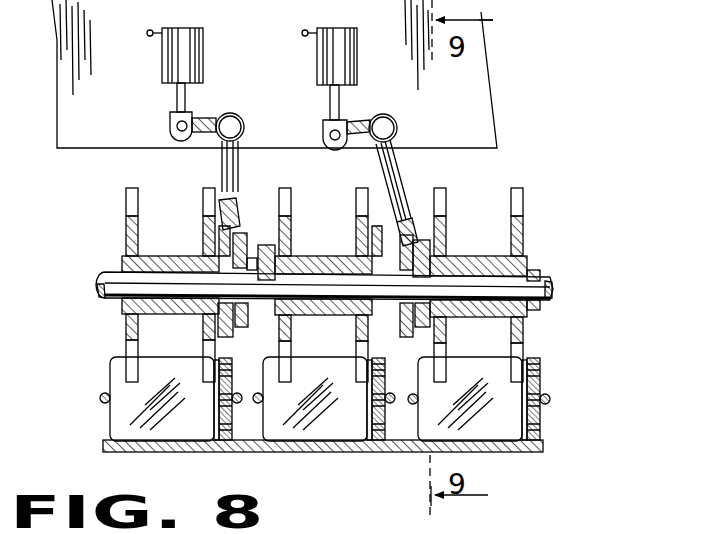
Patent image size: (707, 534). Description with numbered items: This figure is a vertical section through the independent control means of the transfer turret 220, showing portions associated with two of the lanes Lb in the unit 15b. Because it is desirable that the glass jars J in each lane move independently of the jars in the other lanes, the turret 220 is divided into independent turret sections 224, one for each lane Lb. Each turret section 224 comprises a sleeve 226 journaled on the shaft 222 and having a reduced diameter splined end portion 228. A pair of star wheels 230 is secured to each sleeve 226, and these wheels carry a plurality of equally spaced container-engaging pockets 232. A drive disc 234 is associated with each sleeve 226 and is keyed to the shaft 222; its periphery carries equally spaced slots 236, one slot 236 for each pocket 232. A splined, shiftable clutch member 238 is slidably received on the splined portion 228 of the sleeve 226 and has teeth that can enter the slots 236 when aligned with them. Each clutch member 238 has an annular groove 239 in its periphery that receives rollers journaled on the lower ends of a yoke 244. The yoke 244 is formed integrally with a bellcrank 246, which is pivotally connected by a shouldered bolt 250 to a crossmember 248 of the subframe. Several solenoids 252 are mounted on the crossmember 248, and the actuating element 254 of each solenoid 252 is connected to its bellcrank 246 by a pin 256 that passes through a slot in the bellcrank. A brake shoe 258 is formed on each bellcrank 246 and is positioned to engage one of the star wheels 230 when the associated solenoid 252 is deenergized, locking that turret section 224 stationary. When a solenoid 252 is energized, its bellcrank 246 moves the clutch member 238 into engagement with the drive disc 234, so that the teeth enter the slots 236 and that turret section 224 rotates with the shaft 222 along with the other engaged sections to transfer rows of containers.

The clutch unit 15b is at (592, 222).
The turret 220 is at (120, 240).
The shaft 222 is at (554, 289).
The turret section 224 is at (290, 186).
The sleeve 226 is at (124, 266).
The splined end portion 228 is at (372, 320).
The star wheel 230 is at (204, 345).
The container-engaging pocket 232 is at (203, 203).
The drive disc 234 is at (250, 310).
The slot 236 is at (264, 248).
The clutch member 238 is at (222, 318).
The annular groove 239 is at (232, 244).
The yoke 244 is at (425, 172).
The bellcrank 246 is at (238, 143).
The crossmember 248 is at (484, 83).
The shouldered bolt 250 is at (226, 116).
The solenoid 252 is at (318, 28).
The actuating element 254 is at (177, 95).
The pin 256 is at (176, 127).
The brake shoe 258 is at (218, 230).
The lane Lb is at (143, 432).
The glass jar J is at (280, 440).